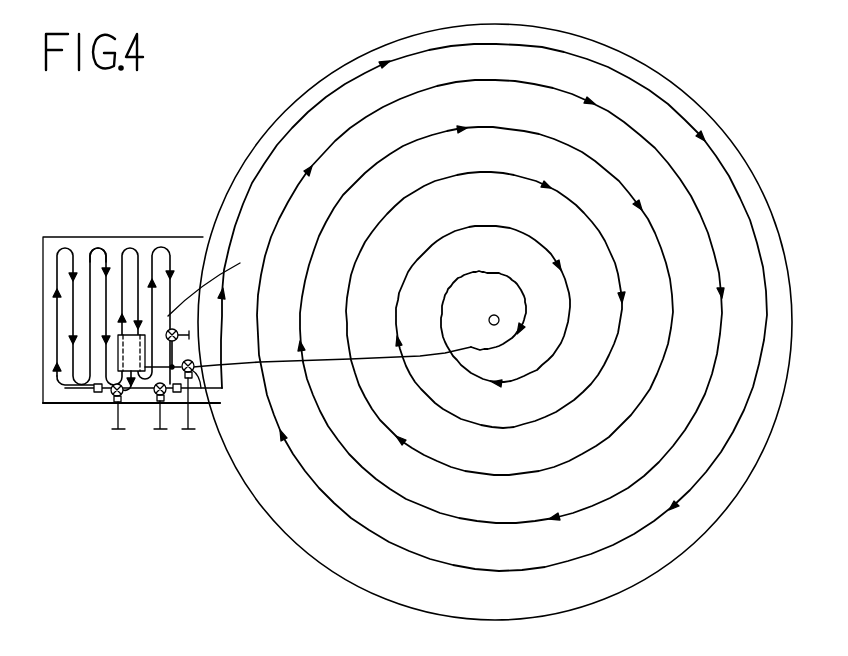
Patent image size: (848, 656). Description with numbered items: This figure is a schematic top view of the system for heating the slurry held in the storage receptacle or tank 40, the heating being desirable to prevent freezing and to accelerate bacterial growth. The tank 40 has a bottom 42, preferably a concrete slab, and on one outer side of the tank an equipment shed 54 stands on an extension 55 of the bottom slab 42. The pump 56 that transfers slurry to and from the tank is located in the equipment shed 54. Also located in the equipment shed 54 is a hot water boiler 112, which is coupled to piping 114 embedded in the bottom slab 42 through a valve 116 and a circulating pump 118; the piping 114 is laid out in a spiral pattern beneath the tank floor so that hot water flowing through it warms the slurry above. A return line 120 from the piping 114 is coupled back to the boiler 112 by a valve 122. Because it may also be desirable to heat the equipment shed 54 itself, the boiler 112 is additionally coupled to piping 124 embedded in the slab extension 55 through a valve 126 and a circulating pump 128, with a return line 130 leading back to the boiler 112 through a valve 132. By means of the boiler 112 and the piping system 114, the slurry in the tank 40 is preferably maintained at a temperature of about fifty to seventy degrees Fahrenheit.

The slurry storage receptacle or tank 40 is at (670, 76).
The bottom 42 is at (768, 238).
The equipment shed 54 is at (491, 316).
The extension of bottom slab 55 is at (95, 236).
The pump 56 is at (113, 253).
The hot water boiler 112 is at (128, 356).
The piping 114 is at (720, 305).
The valve 116 is at (146, 404).
The circulating pump 118 is at (175, 404).
The return line 120 is at (236, 363).
The valve 122 is at (207, 404).
The piping 124 is at (43, 345).
The valve 126 is at (131, 404).
The circulating pump 128 is at (97, 401).
The return line 130 is at (215, 281).
The valve 132 is at (183, 329).